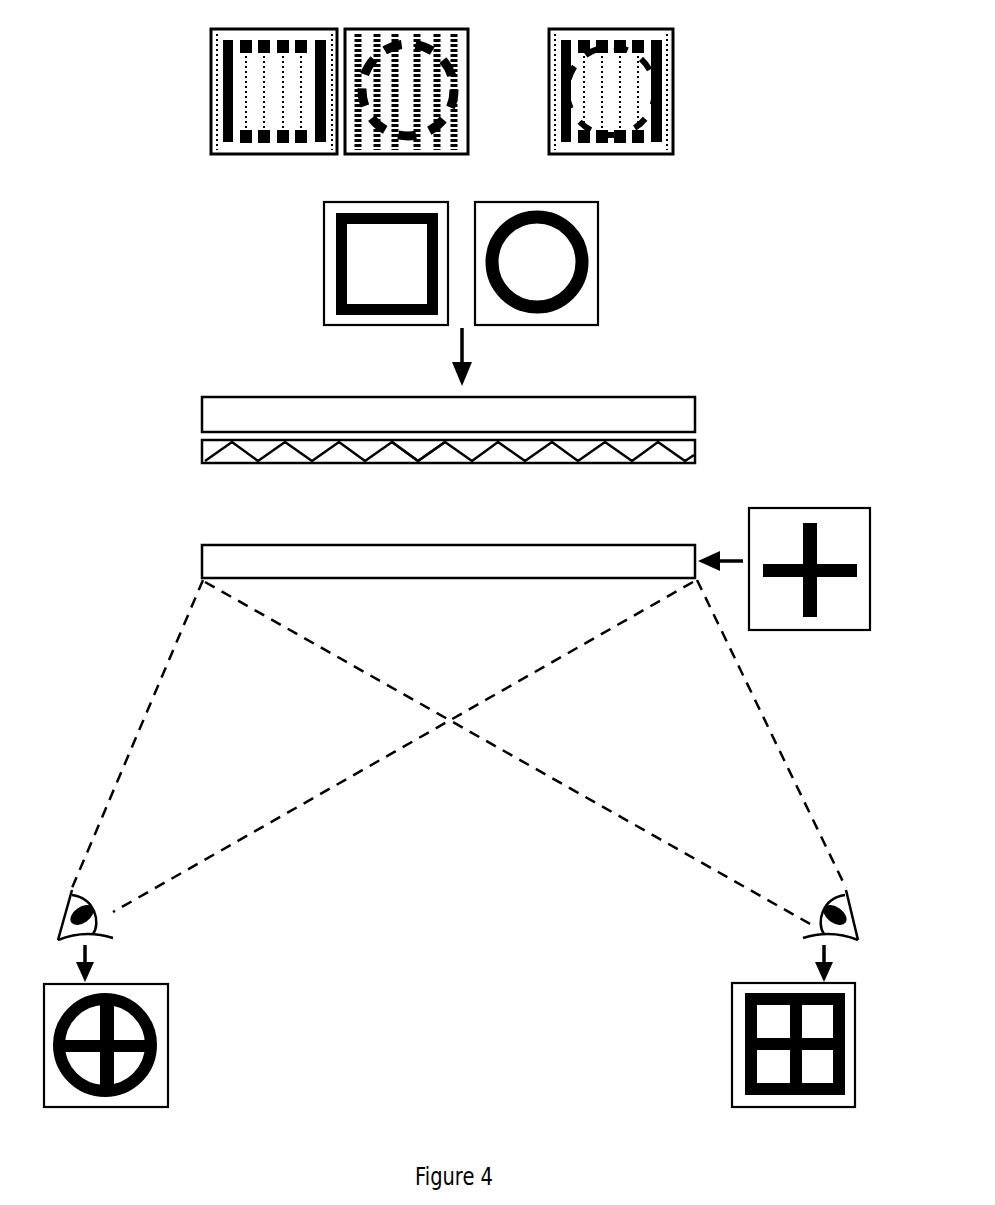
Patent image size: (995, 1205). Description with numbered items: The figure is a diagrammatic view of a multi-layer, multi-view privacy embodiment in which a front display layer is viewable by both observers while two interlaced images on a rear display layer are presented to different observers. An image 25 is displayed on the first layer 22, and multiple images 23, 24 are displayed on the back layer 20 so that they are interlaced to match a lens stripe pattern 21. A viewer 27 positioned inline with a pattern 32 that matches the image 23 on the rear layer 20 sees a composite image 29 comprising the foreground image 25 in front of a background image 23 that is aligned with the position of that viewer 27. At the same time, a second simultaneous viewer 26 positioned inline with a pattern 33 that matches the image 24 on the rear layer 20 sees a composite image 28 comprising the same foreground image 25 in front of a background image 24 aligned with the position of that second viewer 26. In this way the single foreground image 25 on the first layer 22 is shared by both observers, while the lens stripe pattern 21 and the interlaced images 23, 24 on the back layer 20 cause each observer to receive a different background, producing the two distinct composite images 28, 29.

The back layer 20 is at (196, 405).
The lens stripe pattern 21 is at (196, 455).
The first layer 22 is at (196, 562).
The image 23 is at (321, 270).
The image 24 is at (601, 268).
The image 25 is at (748, 524).
The left eye of viewer 26 is at (127, 933).
The viewer 27 is at (792, 928).
The composite image 28 is at (172, 1046).
The composite image 29 is at (729, 1045).
The pattern 32 is at (437, 456).
The pattern 33 is at (403, 456).